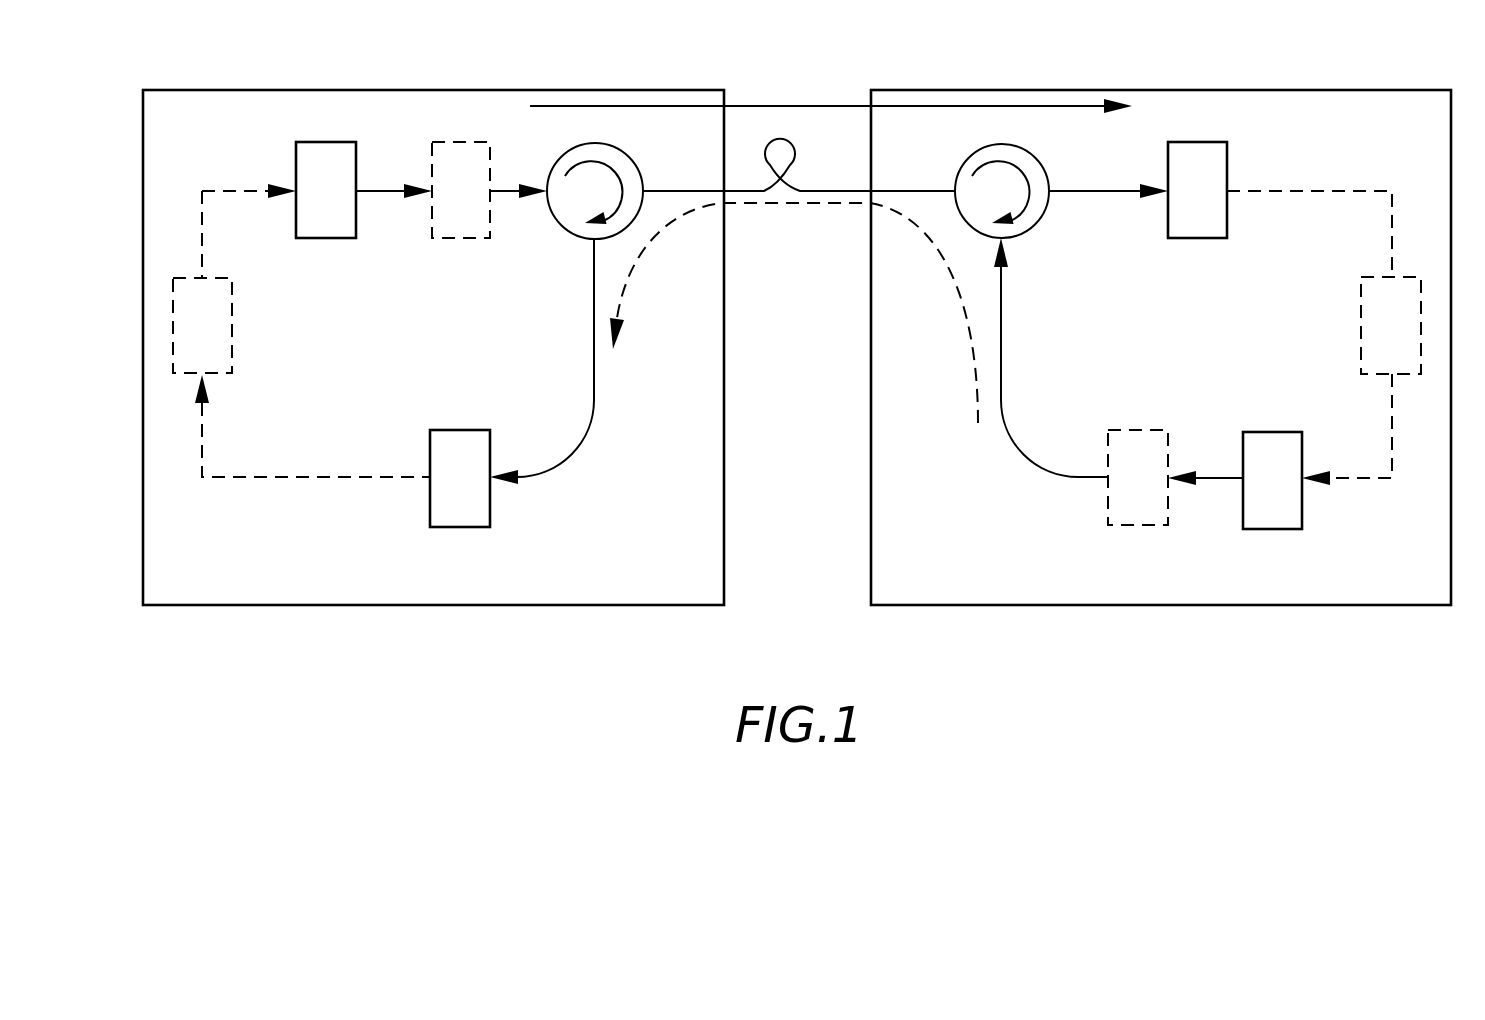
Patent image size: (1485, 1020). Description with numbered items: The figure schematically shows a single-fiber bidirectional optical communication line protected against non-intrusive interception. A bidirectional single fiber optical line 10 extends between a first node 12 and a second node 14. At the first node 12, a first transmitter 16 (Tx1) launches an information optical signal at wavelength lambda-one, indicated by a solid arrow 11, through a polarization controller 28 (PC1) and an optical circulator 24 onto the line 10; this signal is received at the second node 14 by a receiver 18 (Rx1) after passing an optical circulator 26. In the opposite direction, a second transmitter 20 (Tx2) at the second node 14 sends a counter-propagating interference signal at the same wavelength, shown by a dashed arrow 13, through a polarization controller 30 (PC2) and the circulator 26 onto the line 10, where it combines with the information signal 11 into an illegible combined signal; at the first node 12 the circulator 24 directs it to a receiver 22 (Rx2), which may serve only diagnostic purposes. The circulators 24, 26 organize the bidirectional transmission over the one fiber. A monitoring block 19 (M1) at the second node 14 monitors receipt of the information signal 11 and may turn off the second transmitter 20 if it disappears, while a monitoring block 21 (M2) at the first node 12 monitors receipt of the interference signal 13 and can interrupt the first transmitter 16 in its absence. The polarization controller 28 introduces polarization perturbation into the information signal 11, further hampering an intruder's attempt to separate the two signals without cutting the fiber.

The bidirectional single fiber optical line 10 is at (750, 190).
The first optical signal 11 is at (795, 105).
The first node 12 is at (433, 90).
The second optical signal 13 is at (822, 203).
The second node 14 is at (1163, 90).
The first transmitter 16 is at (327, 142).
The receiver 18 is at (1200, 142).
The monitoring block 19 is at (1393, 277).
The second transmitter 20 is at (1275, 432).
The monitoring block 21 is at (232, 318).
The receiver 22 is at (460, 430).
The optical circulator 24 is at (599, 144).
The optical circulator 26 is at (1005, 144).
The polarization controller 28 is at (462, 142).
The polarization controller 30 is at (1137, 430).